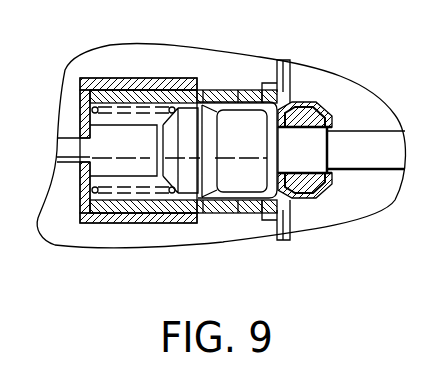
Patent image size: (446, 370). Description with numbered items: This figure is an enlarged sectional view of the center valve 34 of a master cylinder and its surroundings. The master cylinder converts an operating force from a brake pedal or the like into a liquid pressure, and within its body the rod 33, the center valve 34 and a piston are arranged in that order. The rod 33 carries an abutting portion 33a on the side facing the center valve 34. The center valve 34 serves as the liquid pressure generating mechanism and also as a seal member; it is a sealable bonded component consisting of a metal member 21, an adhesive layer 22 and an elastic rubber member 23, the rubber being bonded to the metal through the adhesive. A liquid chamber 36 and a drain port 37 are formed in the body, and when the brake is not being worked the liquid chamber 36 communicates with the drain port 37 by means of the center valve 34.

The rod 33 is at (68, 137).
The abutting portion 33a is at (238, 118).
The center valve 34 is at (311, 101).
The liquid chamber 36 is at (60, 212).
The metal member 21 is at (308, 198).
The adhesive layer 22 is at (316, 196).
The elastic rubber member 23 is at (333, 197).
The drain port 37 is at (386, 156).